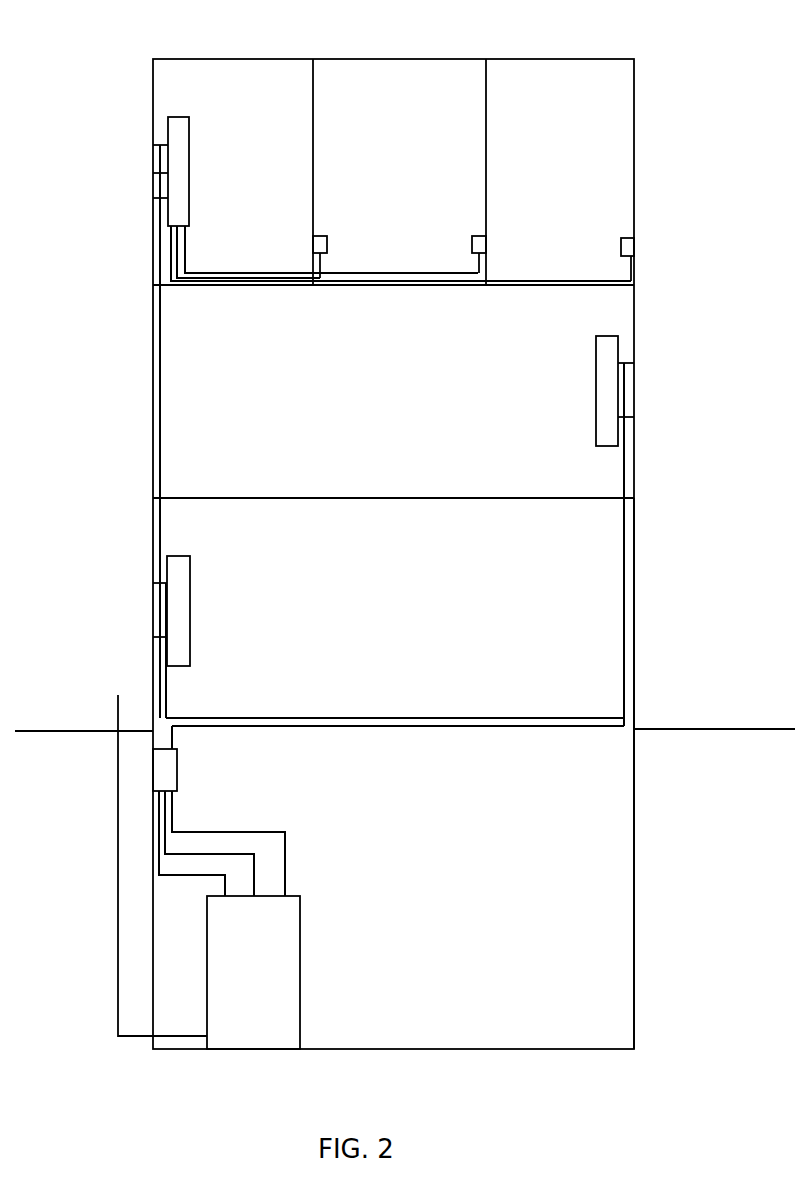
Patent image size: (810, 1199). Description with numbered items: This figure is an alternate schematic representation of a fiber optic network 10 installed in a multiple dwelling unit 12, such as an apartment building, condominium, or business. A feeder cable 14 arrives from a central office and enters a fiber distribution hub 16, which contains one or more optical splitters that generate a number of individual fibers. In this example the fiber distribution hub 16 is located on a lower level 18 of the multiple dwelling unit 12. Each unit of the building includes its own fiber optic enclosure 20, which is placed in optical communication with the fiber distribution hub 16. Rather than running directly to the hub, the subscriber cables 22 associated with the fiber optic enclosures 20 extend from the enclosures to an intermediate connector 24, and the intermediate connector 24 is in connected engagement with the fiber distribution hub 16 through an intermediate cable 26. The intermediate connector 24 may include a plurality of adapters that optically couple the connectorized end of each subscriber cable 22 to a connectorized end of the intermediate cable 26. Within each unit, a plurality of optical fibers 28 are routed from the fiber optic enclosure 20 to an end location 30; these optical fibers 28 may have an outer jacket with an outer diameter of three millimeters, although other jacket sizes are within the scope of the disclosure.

The fiber optic network 10 is at (86, 152).
The multiple dwelling unit 12 is at (700, 88).
The feeder cable 14 is at (118, 777).
The fiber distribution hub 16 is at (300, 978).
The lower level 18 is at (636, 917).
The fiber optic enclosure 20 is at (189, 184).
The subscriber cable 22 is at (160, 375).
The intermediate connector 24 is at (177, 775).
The intermediate cable 26 is at (203, 852).
The optical fibers 28 is at (232, 277).
The end location 30 is at (329, 243).